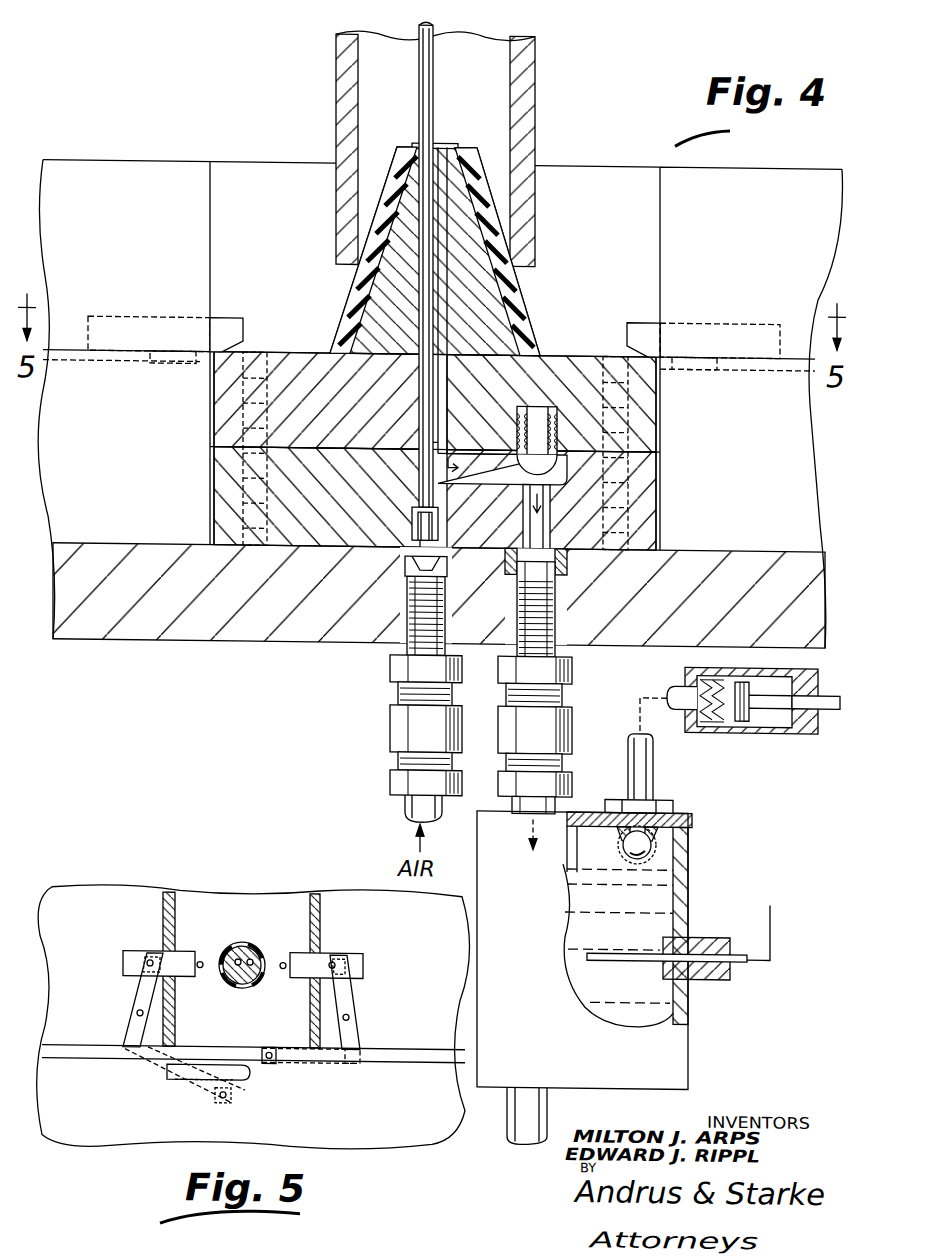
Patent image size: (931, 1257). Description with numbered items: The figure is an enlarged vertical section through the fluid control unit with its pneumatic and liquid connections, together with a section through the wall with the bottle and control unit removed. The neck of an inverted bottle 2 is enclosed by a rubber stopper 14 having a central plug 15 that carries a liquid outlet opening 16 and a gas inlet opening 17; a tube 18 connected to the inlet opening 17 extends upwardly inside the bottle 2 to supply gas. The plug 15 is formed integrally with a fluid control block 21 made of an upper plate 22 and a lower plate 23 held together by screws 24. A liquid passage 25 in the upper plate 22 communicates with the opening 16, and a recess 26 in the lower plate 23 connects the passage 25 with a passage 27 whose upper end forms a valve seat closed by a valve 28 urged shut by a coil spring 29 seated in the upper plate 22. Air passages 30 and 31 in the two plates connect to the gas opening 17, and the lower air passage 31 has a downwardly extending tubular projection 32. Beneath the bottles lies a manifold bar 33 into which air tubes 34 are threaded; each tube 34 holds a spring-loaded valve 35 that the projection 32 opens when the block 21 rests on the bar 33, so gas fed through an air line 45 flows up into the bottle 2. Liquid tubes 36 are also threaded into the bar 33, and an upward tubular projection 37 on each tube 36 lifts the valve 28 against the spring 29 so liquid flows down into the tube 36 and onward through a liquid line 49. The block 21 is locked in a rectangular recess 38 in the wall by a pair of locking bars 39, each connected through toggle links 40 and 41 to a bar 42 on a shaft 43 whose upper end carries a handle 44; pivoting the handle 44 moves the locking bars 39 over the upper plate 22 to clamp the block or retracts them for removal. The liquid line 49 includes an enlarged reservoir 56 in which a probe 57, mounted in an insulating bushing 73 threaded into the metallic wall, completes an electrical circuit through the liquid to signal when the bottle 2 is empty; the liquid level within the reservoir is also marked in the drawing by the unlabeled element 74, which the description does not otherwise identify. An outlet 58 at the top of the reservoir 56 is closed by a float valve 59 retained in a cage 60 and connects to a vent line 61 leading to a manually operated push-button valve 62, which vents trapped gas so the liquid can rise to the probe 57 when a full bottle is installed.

In FIG. 4, the bottle 2 is at (530, 98).
In FIG. 4, the rubber stopper 14 is at (518, 316).
In FIG. 5, the rubber stopper 14 is at (242, 942).
In FIG. 4, the plug 15 is at (372, 306).
In FIG. 5, the plug 15 is at (240, 988).
In FIG. 4, the liquid outlet opening 16 is at (447, 282).
In FIG. 5, the liquid outlet opening 16 is at (225, 976).
In FIG. 4, the gas inlet opening 17 is at (418, 258).
In FIG. 5, the gas inlet opening 17 is at (258, 982).
In FIG. 4, the tube 18 is at (418, 88).
In FIG. 4, the fluid control block 21 is at (588, 353).
In FIG. 4, the upper plate 22 is at (300, 355).
In FIG. 5, the upper plate 22 is at (270, 895).
In FIG. 4, the lower plate 23 is at (312, 552).
In FIG. 4, the screws 24 is at (250, 430).
In FIG. 4, the liquid passage 25 is at (448, 390).
In FIG. 4, the recess 26 is at (505, 490).
In FIG. 4, the passage 27 is at (550, 512).
In FIG. 4, the valve 28 is at (502, 460).
In FIG. 4, the coil spring 29 is at (550, 420).
In FIG. 4, the air passage 30 is at (420, 445).
In FIG. 4, the air passage 31 is at (418, 483).
In FIG. 4, the tubular projection 32 is at (412, 530).
In FIG. 4, the manifold or connecting bar 33 is at (205, 645).
In FIG. 4, the tube 34 is at (448, 600).
In FIG. 4, the spring-loaded valve 35 is at (408, 570).
In FIG. 4, the tube 36 is at (556, 615).
In FIG. 4, the tubular projection 37 is at (522, 535).
In FIG. 4, the recess 38 is at (660, 164).
In FIG. 5, the recess 38 is at (195, 895).
In FIG. 4, the locking bar 39 is at (245, 305).
In FIG. 5, the locking bar 39 is at (192, 955).
In FIG. 4, the toggle link 40 is at (165, 366).
In FIG. 5, the toggle link 40 is at (142, 996).
In FIG. 5, the toggle link 41 is at (146, 1072).
In FIG. 5, the bar 42 is at (232, 1099).
In FIG. 5, the shaft 43 is at (255, 1078).
In FIG. 5, the handle 44 is at (182, 1082).
In FIG. 4, the air line 45 is at (405, 805).
In FIG. 4, the liquid line 49 is at (556, 805).
In FIG. 4, the reservoir 56 is at (690, 884).
In FIG. 4, the probe 57 is at (588, 958).
In FIG. 4, the outlet 58 is at (668, 826).
In FIG. 4, the float valve 59 is at (620, 846).
In FIG. 4, the cage 60 is at (652, 844).
In FIG. 4, the vent line 61 is at (645, 725).
In FIG. 4, the push-button type valve 62 is at (748, 733).
In FIG. 4, the insulating bushing 73 is at (712, 982).
In FIG. 4, the liquid 74 is at (645, 914).